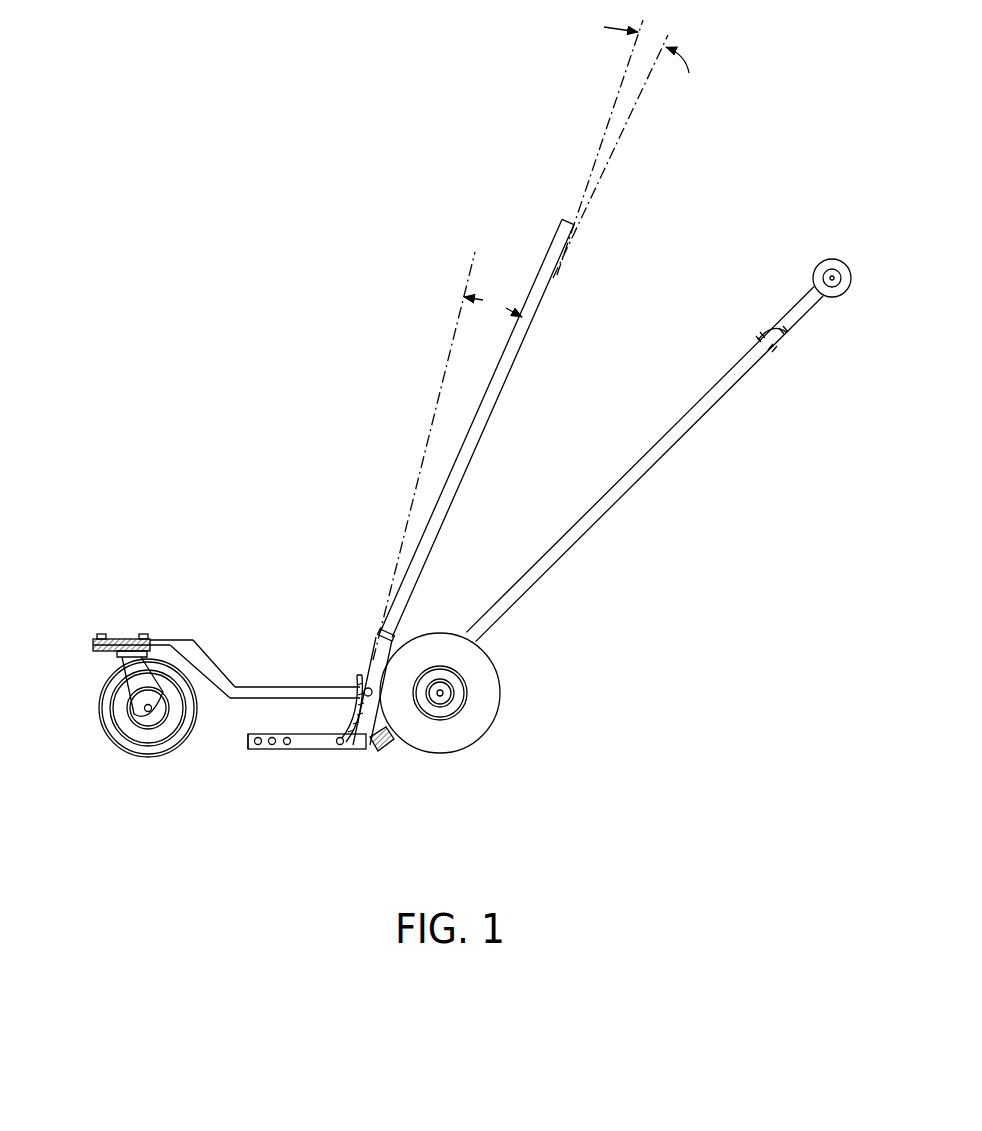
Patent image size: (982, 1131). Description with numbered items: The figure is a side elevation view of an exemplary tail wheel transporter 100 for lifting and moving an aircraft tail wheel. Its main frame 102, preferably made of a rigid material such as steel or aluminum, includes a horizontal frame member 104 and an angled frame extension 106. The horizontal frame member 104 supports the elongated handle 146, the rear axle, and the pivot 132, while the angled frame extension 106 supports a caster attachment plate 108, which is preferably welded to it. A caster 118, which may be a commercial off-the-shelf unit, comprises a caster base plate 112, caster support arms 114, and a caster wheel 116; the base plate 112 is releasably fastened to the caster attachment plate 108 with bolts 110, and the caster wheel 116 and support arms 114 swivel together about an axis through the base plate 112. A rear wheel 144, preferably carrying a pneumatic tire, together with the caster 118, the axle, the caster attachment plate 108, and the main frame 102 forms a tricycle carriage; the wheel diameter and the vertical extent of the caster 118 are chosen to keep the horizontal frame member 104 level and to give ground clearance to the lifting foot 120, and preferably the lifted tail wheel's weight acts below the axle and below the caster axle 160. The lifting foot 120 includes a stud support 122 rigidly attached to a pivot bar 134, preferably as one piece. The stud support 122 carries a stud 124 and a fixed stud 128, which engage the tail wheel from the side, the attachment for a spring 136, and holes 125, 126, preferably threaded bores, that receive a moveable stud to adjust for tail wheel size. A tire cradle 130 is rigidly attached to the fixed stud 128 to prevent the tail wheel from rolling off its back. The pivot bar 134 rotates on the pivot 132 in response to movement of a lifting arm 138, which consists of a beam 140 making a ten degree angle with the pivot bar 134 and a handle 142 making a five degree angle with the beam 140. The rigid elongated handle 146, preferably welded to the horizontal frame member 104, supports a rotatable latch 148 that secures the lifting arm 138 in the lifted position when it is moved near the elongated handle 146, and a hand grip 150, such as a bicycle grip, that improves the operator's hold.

The tail wheel transporter 100 is at (303, 210).
The main frame 102 is at (259, 630).
The horizontal frame member 104 is at (260, 692).
The angled frame extension 106 is at (201, 661).
The caster attachment plate 108 is at (165, 638).
The bolts 110 is at (102, 637).
The caster base plate 112 is at (118, 659).
The caster support arms 114 is at (128, 664).
The caster wheel 116 is at (120, 727).
The caster 118 is at (131, 772).
The caster axle 160 is at (148, 709).
The lifting foot 120 is at (322, 777).
The stud support 122 is at (250, 742).
The stud 124 is at (258, 748).
The hole 125 is at (272, 748).
The hole 126 is at (287, 748).
The fixed stud 128 is at (341, 748).
The tire cradle 130 is at (359, 679).
The pivot 132 is at (367, 687).
The pivot bar 134 is at (387, 651).
The spring 136 is at (380, 748).
The lifting arm 138 is at (409, 428).
The beam 140 is at (458, 468).
The handle 142 is at (558, 236).
The rear wheel 144 is at (481, 680).
The elongated handle 146 is at (652, 456).
The latch 148 is at (758, 338).
The handle 150 is at (821, 265).